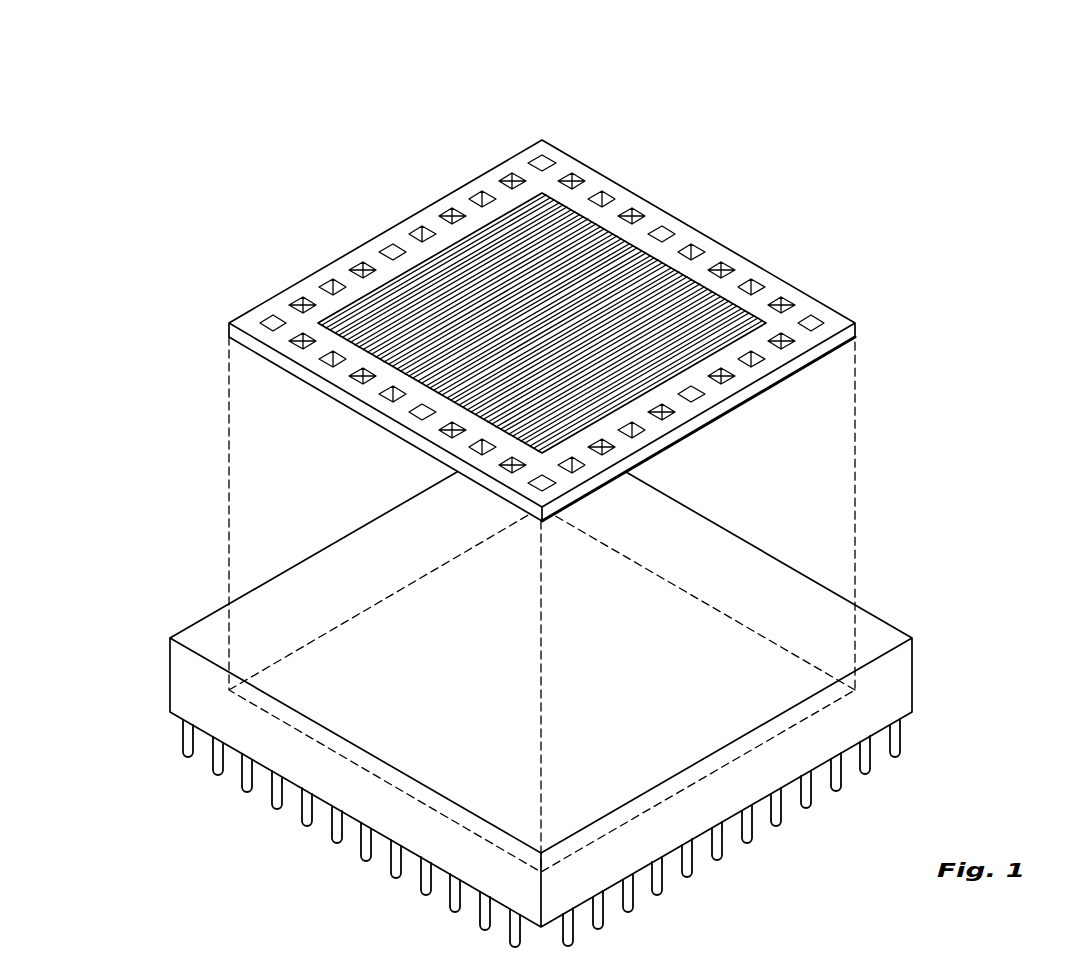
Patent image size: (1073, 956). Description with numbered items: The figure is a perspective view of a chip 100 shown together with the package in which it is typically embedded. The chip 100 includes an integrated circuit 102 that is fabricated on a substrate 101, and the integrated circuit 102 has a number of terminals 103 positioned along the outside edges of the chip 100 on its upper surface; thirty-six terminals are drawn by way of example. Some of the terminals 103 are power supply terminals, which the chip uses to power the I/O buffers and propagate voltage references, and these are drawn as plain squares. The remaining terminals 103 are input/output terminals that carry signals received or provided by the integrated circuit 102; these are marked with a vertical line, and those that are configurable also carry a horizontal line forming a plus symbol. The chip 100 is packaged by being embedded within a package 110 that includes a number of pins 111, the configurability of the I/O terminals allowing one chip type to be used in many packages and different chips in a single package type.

The chip 100 is at (207, 158).
The substrate 101 is at (858, 345).
The integrated circuit 102 is at (542, 323).
The terminals 103 is at (542, 321).
The package 110 is at (902, 673).
The pins 111 is at (910, 733).